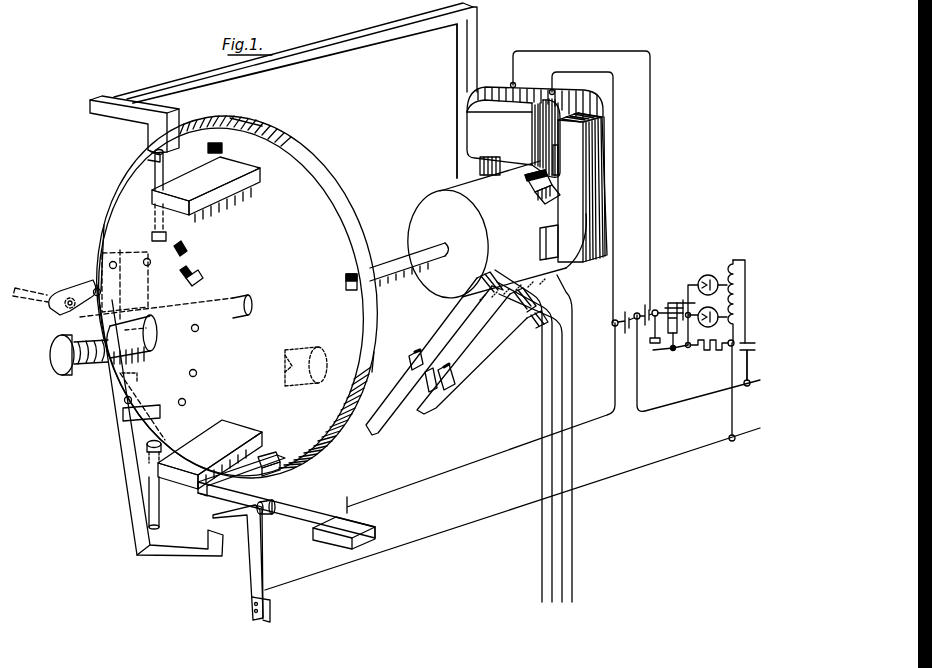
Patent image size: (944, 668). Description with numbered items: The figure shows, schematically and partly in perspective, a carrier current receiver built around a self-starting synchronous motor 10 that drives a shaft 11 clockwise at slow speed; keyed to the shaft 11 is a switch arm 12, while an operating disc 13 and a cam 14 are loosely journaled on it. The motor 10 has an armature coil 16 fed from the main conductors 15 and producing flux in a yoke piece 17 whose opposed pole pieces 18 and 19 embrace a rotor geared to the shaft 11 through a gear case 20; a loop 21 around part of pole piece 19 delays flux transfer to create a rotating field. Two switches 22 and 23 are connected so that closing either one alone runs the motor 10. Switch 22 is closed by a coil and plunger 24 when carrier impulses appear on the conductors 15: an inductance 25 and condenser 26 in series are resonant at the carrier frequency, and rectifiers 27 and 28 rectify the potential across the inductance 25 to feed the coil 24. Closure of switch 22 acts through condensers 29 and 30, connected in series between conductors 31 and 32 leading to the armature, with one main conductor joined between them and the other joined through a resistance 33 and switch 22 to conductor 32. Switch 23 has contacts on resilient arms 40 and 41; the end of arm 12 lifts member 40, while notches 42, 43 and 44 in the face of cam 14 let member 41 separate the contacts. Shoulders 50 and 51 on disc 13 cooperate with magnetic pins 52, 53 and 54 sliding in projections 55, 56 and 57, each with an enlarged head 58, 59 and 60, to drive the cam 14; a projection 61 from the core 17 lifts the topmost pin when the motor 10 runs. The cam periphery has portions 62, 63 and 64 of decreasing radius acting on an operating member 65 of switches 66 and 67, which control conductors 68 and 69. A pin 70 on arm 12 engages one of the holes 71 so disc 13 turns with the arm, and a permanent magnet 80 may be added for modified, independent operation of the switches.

The self-starting synchronous motor 10 is at (458, 174).
The shaft 11 is at (380, 258).
The switch arm 12 is at (100, 416).
The operating disc 13 is at (113, 250).
The cam 14 is at (285, 150).
The main conductors 15 is at (681, 402).
The armature coil 16 is at (528, 82).
The yoke piece 17 is at (593, 213).
The pole piece 18 is at (527, 182).
The pole piece 19 is at (530, 197).
The gear case 20 is at (437, 288).
The loop 21 is at (548, 255).
The switch 22 is at (675, 303).
The switch 23 is at (268, 501).
The coil and plunger 24 is at (683, 300).
The inductance 25 is at (733, 262).
The condenser 26 is at (750, 265).
The rectifier 27 is at (688, 285).
The rectifier 28 is at (708, 275).
The condenser 29 is at (627, 306).
The condenser 30 is at (645, 305).
The conductor 31 is at (613, 115).
The conductor 32 is at (650, 115).
The resistance 33 is at (708, 352).
The resilient arm 40 is at (262, 562).
The resilient arm 41 is at (300, 508).
The notch 42 is at (278, 462).
The notch 43 is at (346, 284).
The notch 44 is at (222, 148).
The shoulder 50 is at (180, 276).
The shoulder 51 is at (187, 251).
The pin 52 is at (168, 486).
The pin 53 is at (40, 285).
The pin 54 is at (164, 168).
The projection 55 is at (245, 430).
The projection 56 is at (70, 283).
The projection 57 is at (206, 189).
The enlarged head 58 is at (161, 448).
The enlarged head 59 is at (68, 308).
The enlarged head 60 is at (166, 237).
The projection 61 is at (170, 135).
The first peripheral portion 62 is at (127, 167).
The second peripheral portion 63 is at (262, 126).
The third peripheral portion 64 is at (374, 354).
The operating member 65 is at (397, 400).
The switch 66 is at (452, 384).
The switch 67 is at (408, 366).
The conductors 68 is at (542, 552).
The conductors 69 is at (572, 547).
The pin 70 is at (128, 421).
The holes 71 is at (100, 290).
The permanent magnet 80 is at (318, 358).